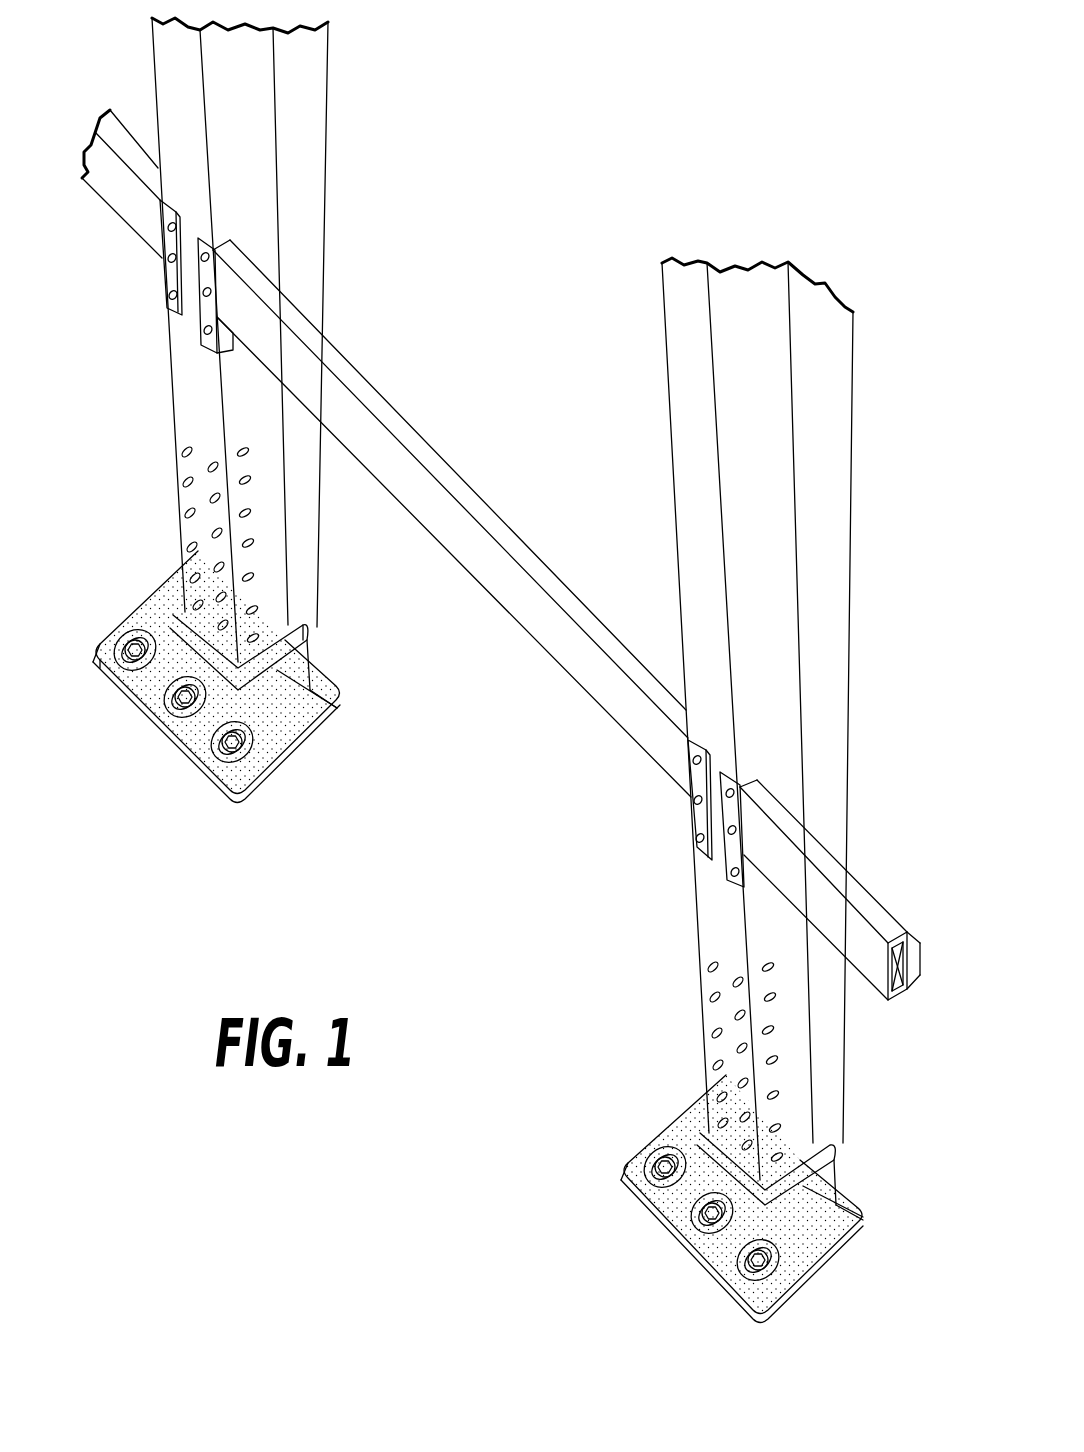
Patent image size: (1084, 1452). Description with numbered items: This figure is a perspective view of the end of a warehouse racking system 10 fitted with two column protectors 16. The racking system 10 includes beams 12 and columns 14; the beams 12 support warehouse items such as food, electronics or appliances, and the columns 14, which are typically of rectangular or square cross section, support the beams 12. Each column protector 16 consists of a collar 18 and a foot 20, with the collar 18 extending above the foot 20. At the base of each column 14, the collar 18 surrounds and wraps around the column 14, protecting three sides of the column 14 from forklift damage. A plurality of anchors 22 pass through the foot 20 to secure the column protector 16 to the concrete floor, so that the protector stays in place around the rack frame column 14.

The warehouse racking system 10 is at (684, 213).
The beam 12 is at (122, 133).
The column 14 is at (177, 468).
The column protector 16 is at (208, 793).
The collar 18 is at (293, 652).
The foot 20 is at (308, 707).
The anchor 22 is at (140, 656).